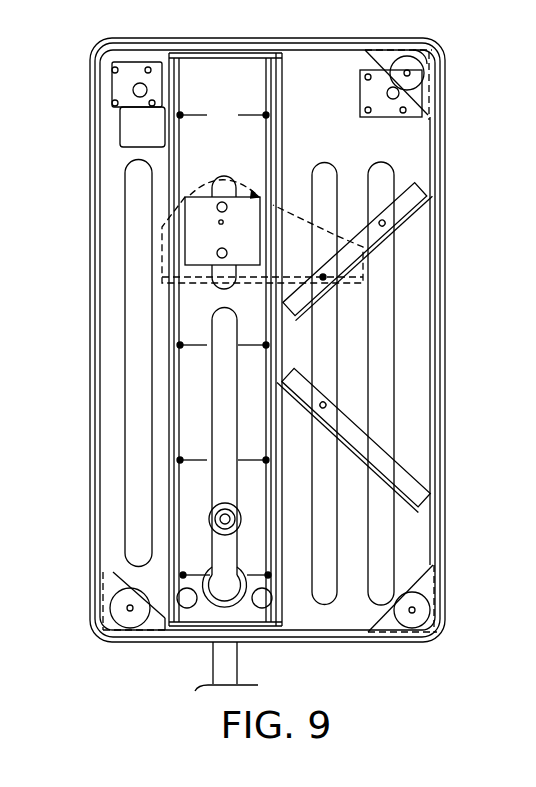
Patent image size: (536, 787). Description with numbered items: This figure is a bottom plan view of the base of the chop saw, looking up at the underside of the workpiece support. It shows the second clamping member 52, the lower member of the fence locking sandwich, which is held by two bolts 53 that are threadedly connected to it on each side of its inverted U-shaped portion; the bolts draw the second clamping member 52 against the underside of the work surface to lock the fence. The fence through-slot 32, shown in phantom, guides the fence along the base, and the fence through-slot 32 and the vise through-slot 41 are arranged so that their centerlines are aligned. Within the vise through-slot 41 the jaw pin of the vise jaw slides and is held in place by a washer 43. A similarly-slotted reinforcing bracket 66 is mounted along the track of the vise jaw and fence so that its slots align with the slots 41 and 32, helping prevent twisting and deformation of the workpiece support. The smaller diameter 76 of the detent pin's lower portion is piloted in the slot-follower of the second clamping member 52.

The reinforcing bracket 66 is at (280, 80).
The second clamping member 52 is at (185, 222).
The bolts 53 is at (216, 205).
The smaller diameter 76 is at (219, 221).
The fence through-slot 32 is at (212, 267).
The vise through-slot 41 is at (211, 482).
The washer 43 is at (210, 523).